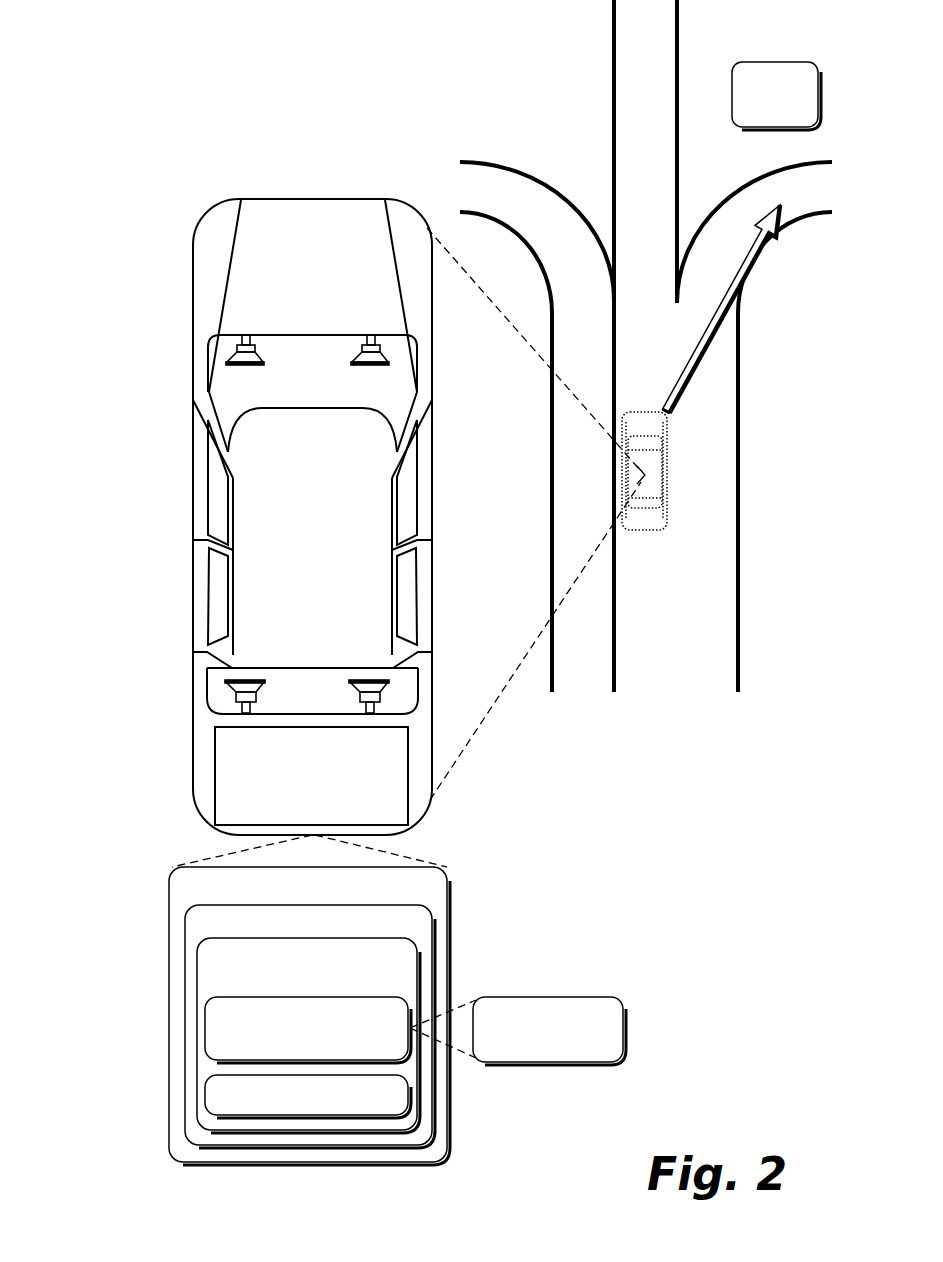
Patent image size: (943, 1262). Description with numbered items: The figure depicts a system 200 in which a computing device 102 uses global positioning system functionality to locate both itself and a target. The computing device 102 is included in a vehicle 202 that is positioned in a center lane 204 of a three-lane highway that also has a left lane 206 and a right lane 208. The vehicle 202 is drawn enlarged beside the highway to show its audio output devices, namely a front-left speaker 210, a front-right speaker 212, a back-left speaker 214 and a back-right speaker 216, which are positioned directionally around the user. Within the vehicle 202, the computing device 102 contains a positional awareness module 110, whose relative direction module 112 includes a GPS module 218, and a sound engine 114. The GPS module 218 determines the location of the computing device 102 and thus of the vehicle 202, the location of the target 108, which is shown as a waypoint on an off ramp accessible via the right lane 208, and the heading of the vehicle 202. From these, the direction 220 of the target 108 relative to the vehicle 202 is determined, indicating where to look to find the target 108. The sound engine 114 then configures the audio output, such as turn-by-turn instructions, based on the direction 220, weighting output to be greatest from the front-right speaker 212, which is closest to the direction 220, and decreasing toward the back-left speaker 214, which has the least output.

The system 200 is at (176, 84).
The vehicle 202 is at (360, 898).
The computing device 102 is at (412, 936).
The positional awareness module 110 is at (362, 994).
The relative direction module 112 is at (362, 1052).
The sound engine 114 is at (393, 1106).
The GPS module 218 is at (567, 1051).
The target 108 is at (773, 203).
The center lane 204 is at (662, 682).
The left lane 206 is at (600, 682).
The right lane 208 is at (725, 682).
The front-left speaker 210 is at (249, 368).
The front-right speaker 212 is at (367, 368).
The back-left speaker 214 is at (245, 682).
The back-right speaker 216 is at (370, 682).
The direction 220 is at (734, 308).